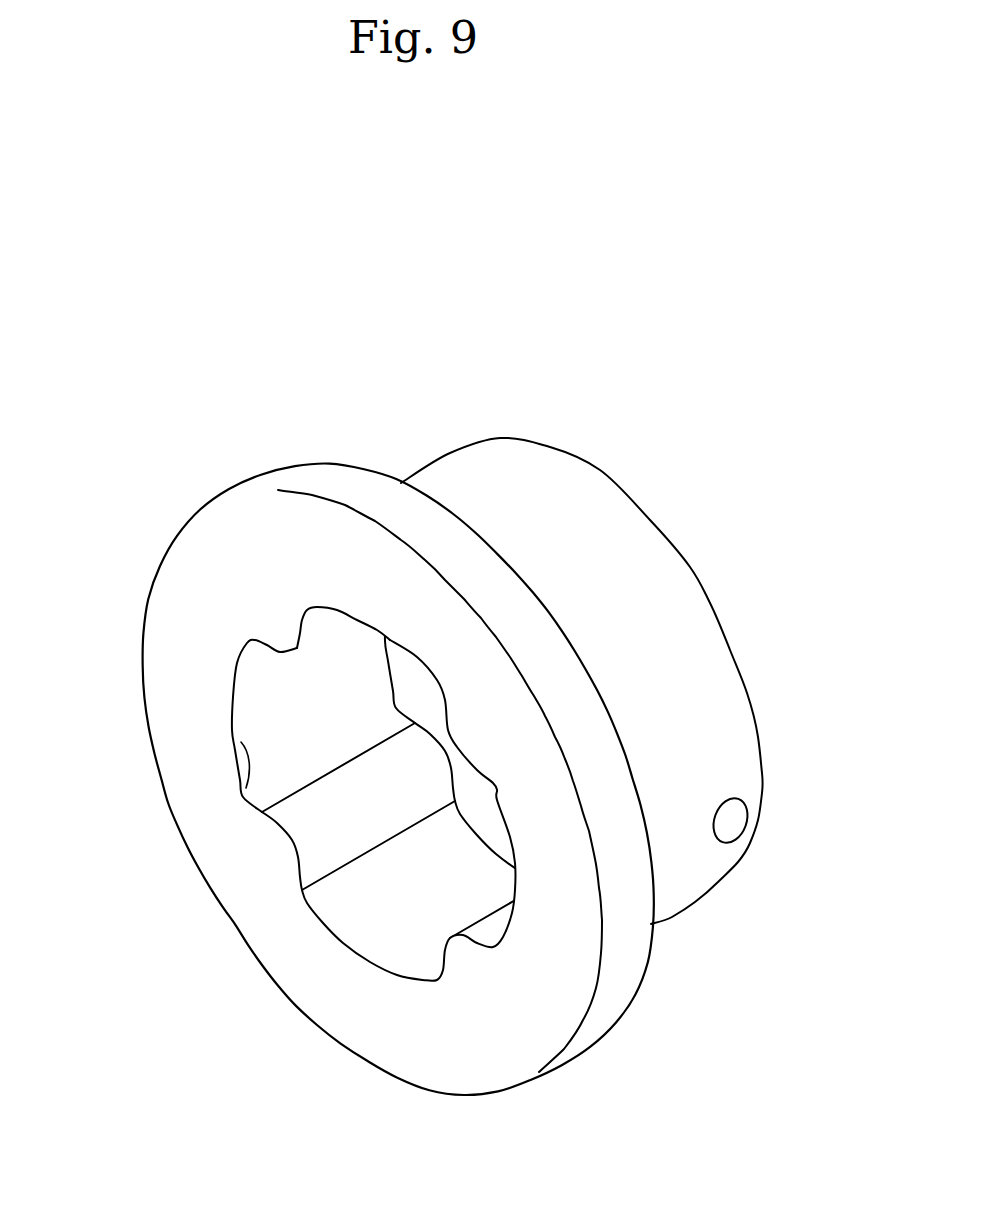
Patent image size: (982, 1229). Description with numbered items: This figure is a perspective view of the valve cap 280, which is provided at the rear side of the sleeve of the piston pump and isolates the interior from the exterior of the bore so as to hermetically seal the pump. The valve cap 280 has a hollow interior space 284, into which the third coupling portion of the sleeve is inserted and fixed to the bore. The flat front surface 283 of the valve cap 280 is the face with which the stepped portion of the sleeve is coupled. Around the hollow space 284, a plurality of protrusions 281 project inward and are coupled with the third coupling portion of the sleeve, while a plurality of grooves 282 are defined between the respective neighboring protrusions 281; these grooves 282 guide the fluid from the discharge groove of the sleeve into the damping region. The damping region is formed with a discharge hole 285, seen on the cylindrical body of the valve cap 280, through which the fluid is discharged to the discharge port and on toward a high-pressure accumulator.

The valve cap 280 is at (222, 437).
The protrusions 281 is at (353, 615).
The grooves 282 is at (243, 788).
The front surface 283 is at (198, 582).
The hollow interior space 284 is at (370, 715).
The discharge hole 285 is at (734, 818).